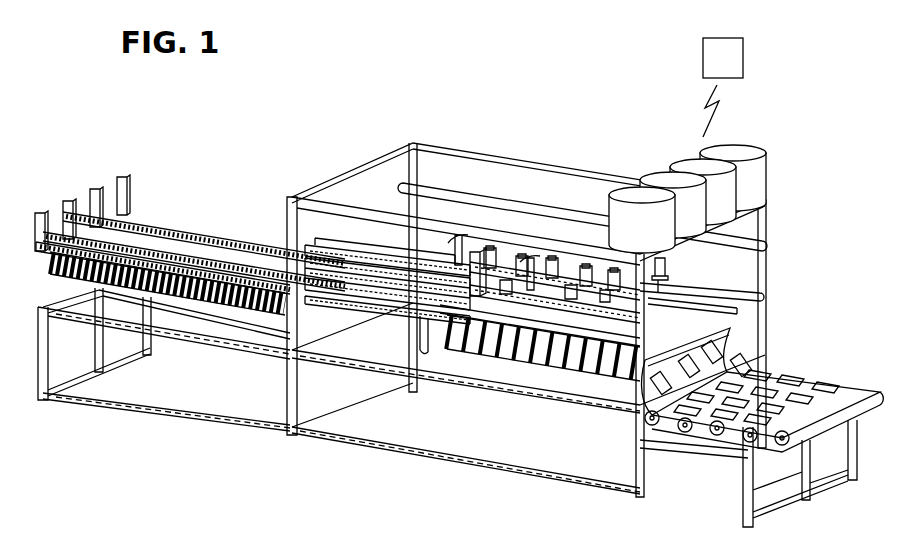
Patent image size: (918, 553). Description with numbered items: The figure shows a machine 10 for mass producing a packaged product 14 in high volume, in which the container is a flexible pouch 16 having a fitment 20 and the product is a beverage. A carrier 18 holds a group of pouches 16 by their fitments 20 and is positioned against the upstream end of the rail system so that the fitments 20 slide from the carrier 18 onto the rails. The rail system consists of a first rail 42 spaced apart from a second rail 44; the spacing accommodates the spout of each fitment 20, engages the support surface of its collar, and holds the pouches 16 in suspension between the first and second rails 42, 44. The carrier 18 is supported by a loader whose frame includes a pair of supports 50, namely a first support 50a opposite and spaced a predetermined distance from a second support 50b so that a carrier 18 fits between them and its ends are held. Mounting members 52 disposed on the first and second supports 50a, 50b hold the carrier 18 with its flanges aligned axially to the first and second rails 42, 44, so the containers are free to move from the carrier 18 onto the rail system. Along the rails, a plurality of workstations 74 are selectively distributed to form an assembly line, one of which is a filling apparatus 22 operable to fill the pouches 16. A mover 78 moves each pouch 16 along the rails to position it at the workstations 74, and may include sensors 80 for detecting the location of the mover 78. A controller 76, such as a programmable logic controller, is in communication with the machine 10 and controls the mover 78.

The machine 10 is at (549, 98).
The packaged product 14 is at (828, 385).
The flexible pouch 16 is at (58, 263).
The carrier 18 is at (70, 227).
The fitment 20 is at (745, 311).
The filling apparatus 22 is at (683, 249).
The first rail 42 is at (330, 300).
The second rail 44 is at (352, 300).
The pair of supports 50 is at (145, 350).
The first support 50a is at (45, 256).
The second support 50b is at (290, 335).
The mounting members 52 is at (38, 246).
The workstations 74 is at (493, 257).
The controller 76 is at (714, 67).
The mover 78 is at (438, 318).
The sensors 80 is at (458, 243).